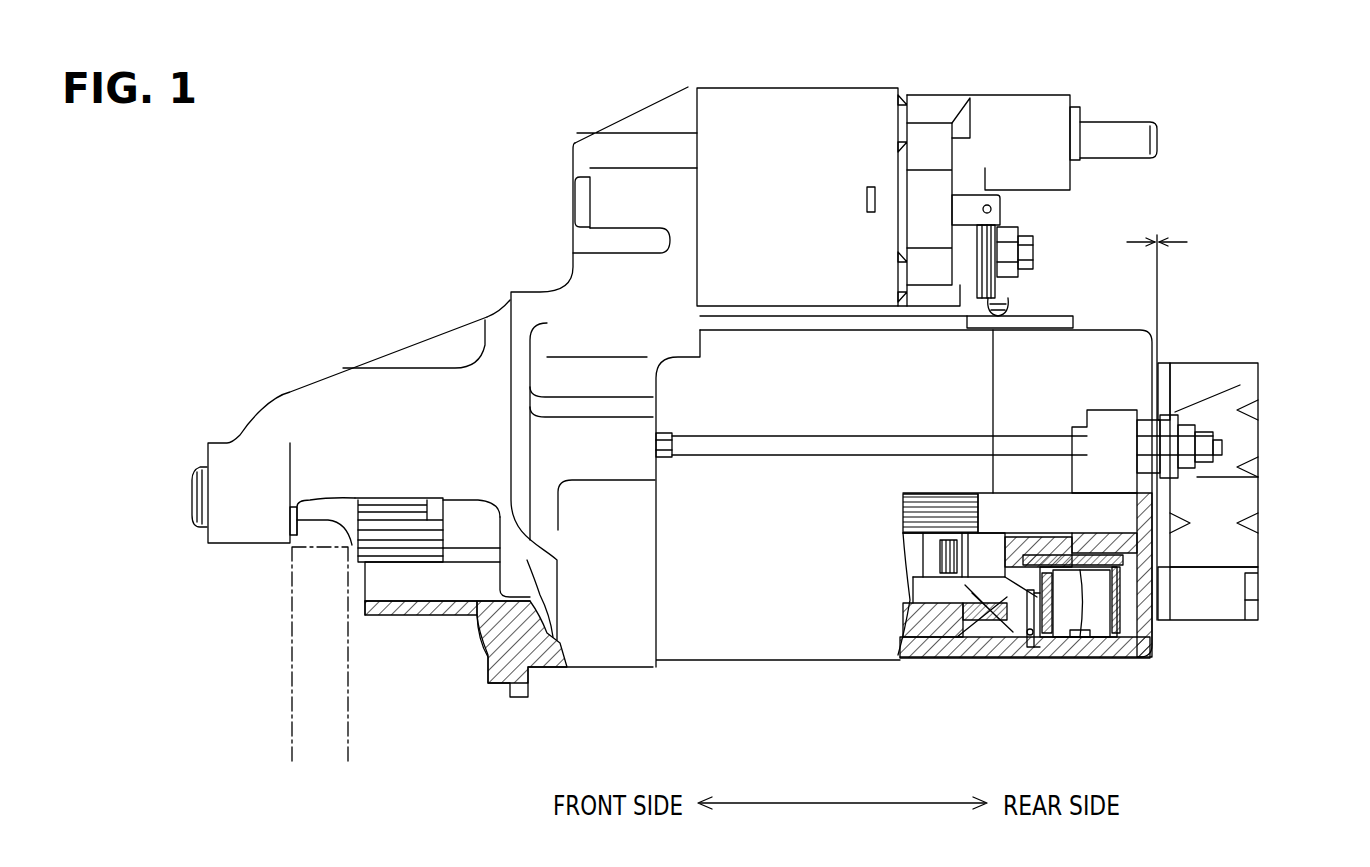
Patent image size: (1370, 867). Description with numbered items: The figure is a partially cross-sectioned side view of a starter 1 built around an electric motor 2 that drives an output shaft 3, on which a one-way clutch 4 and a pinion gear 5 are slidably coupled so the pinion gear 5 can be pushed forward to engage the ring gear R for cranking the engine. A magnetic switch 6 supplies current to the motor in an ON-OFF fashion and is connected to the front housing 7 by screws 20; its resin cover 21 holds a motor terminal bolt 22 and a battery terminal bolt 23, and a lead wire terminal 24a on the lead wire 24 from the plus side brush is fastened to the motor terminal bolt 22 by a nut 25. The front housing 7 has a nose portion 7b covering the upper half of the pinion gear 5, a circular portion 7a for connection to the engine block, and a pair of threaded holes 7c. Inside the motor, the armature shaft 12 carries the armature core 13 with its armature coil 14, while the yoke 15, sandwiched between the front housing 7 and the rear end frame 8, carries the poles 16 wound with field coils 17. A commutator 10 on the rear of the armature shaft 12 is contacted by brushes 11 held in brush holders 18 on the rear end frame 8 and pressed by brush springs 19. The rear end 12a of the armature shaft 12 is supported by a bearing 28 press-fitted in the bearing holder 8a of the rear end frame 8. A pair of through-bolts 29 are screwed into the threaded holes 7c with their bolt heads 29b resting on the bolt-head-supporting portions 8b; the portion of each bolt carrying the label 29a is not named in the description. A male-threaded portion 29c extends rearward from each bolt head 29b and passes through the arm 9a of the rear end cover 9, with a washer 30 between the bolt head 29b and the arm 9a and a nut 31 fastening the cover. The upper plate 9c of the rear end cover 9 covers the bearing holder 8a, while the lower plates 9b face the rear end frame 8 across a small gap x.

The starter 1 is at (501, 104).
The electric motor 2 is at (831, 665).
The output shaft 3 is at (323, 513).
The one-way clutch 4 is at (477, 635).
The pinion gear 5 is at (397, 540).
The magnetic switch 6 is at (823, 85).
The front housing 7 is at (604, 655).
The circular portion 7a is at (500, 307).
The nose portion 7b is at (344, 380).
The threaded holes 7c is at (583, 420).
The rear end frame 8 is at (1090, 330).
The bearing holder 8a is at (1250, 590).
The bolt-head-supporting portions 8b is at (1110, 362).
The rear end cover 9 is at (1240, 370).
The arm 9a is at (1210, 400).
The lower plates 9b is at (1166, 350).
The upper plate 9c is at (1250, 605).
The commutator 10 is at (1070, 625).
The brushes 11 is at (1115, 640).
The armature shaft 12 is at (915, 590).
The rear end of armature shaft 12a is at (1130, 505).
The armature core 13 is at (940, 590).
The armature coil 14 is at (975, 610).
The yoke 15 is at (985, 610).
The poles 16 is at (950, 605).
The field coils 17 is at (1010, 615).
The brush holders 18 is at (1110, 620).
The brush springs 19 is at (1090, 630).
The screws 20 is at (575, 198).
The cover 21 is at (1030, 92).
The motor terminal bolt 22 is at (1000, 245).
The battery terminal bolt 23 is at (1143, 130).
The lead wire 24 is at (1005, 303).
The lead wire terminal 24a is at (990, 230).
The nut 25 is at (1020, 266).
The bearing 28 is at (1250, 522).
The through-bolts 29 is at (745, 450).
The front end of armature shaft 29a is at (663, 457).
The bolt head 29b is at (1182, 412).
The male-threaded portion 29c is at (1217, 440).
The washer 30 is at (1252, 466).
The nut 31 is at (1252, 415).
The ring gear R is at (290, 650).
The small gap x is at (1157, 417).